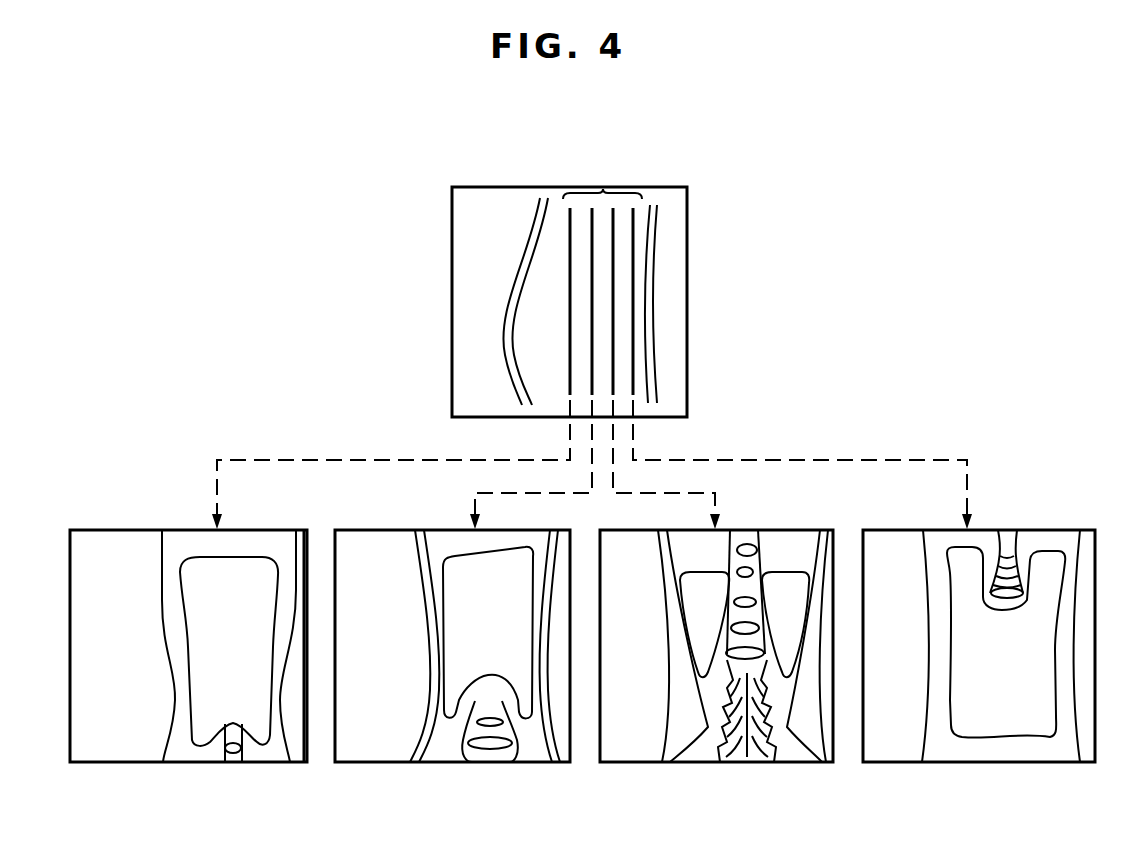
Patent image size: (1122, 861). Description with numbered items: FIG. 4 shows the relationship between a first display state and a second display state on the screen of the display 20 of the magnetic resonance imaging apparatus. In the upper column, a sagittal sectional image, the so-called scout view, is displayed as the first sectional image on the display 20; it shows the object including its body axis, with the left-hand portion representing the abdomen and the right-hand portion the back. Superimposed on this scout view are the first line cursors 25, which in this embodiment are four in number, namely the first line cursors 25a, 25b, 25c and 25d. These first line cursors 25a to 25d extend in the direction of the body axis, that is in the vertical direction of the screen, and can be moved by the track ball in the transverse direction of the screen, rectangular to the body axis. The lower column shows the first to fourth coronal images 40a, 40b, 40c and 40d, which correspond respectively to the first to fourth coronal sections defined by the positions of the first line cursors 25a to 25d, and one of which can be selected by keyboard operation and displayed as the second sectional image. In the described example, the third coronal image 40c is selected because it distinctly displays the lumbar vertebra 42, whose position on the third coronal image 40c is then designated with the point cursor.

The display 20 is at (703, 318).
The first line cursors 25 is at (671, 271).
The first line cursor 25a is at (572, 237).
The first line cursor 25b is at (595, 263).
The first line cursor 25c is at (615, 357).
The first line cursor 25d is at (633, 380).
The first coronal image 40a is at (132, 762).
The second coronal image 40b is at (375, 762).
The third coronal image 40c is at (725, 650).
The fourth coronal image 40d is at (898, 762).
The lumbar vertebra 42 is at (750, 588).